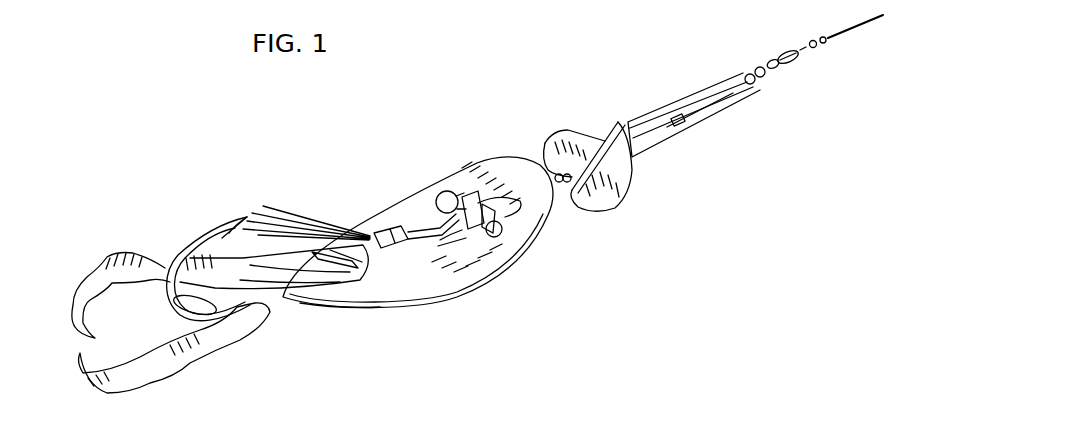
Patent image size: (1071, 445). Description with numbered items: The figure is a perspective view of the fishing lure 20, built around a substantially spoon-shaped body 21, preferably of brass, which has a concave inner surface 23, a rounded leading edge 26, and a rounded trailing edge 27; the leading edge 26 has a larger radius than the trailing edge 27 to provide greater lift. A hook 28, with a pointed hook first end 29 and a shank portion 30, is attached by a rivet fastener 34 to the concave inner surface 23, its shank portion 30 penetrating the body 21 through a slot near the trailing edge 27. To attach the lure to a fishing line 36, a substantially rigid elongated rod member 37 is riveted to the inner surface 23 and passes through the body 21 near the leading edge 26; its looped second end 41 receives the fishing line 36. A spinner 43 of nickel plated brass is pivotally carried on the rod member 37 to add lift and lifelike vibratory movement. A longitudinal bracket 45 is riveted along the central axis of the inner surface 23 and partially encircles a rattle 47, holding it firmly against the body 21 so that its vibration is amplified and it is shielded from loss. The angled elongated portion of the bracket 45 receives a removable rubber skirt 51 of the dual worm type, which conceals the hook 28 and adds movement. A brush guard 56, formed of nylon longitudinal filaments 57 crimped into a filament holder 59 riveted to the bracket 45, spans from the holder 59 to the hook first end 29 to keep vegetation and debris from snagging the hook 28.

The fishing lure 20 is at (112, 186).
The spoon-shaped body 21 is at (472, 302).
The concave inner surface 23 is at (338, 290).
The rounded leading edge 26 is at (533, 153).
The rounded trailing edge 27 is at (285, 300).
The hook 28 is at (178, 230).
The pointed hook first end 29 is at (214, 232).
The shank portion 30 is at (170, 300).
The rivet fastener 34 is at (423, 228).
The fishing line 36 is at (865, 27).
The rod member 37 is at (513, 226).
The looped second end 41 is at (793, 60).
The spinner 43 is at (670, 156).
The longitudinal bracket 45 is at (442, 258).
The rattle 47 is at (515, 245).
The removable skirt 51 is at (186, 381).
The brush guard 56 is at (298, 193).
The longitudinal filaments 57 is at (265, 206).
The filament holder 59 is at (384, 211).